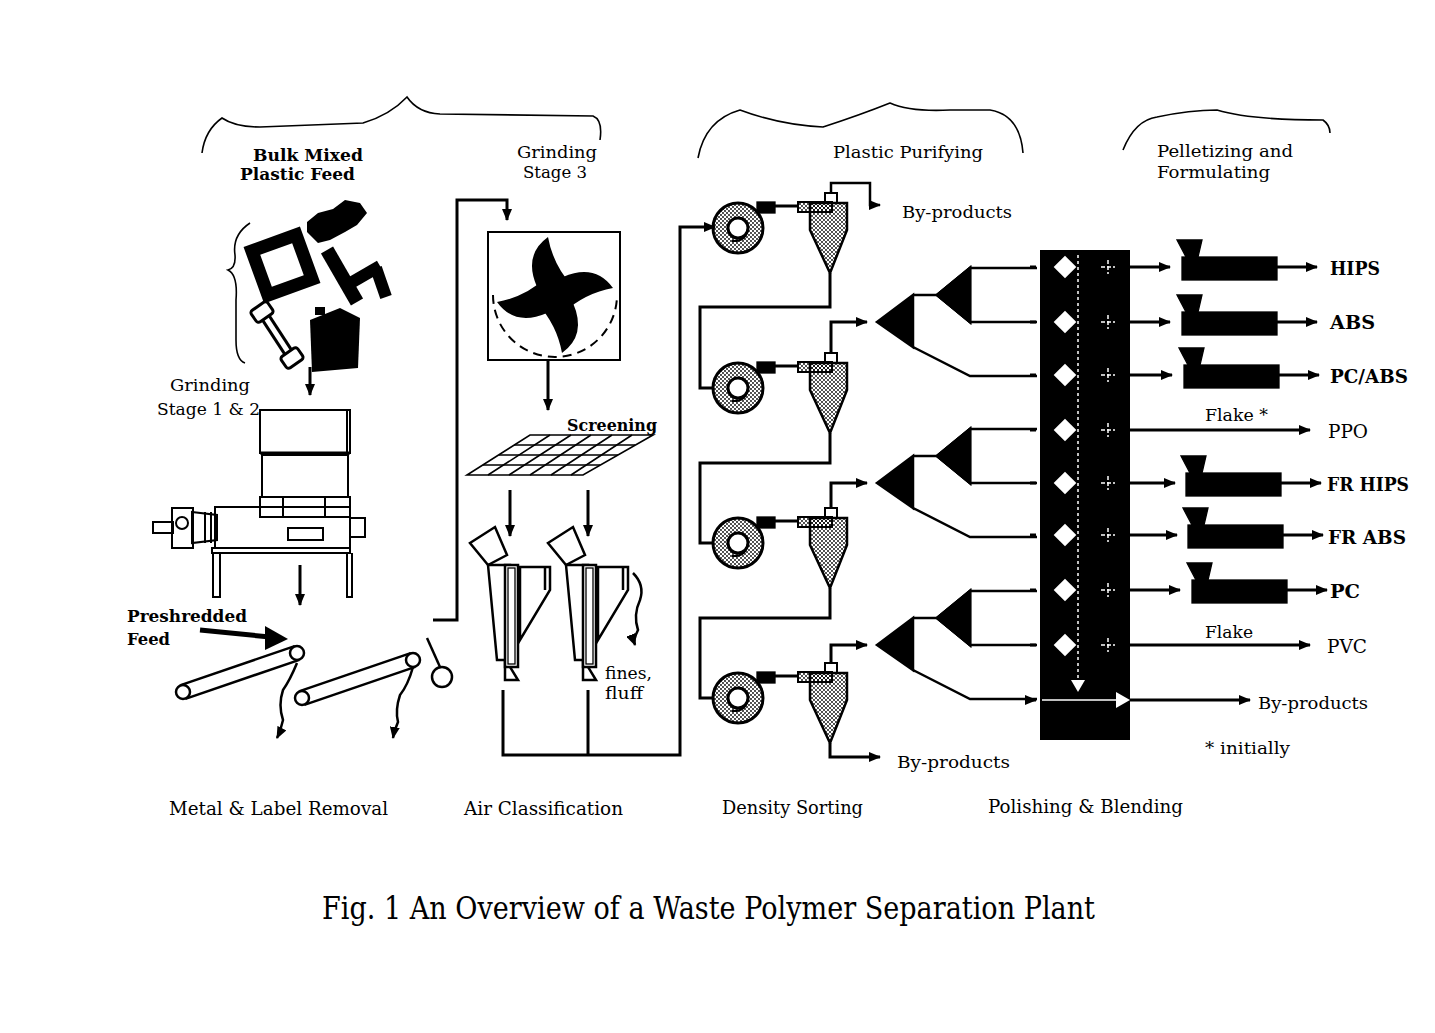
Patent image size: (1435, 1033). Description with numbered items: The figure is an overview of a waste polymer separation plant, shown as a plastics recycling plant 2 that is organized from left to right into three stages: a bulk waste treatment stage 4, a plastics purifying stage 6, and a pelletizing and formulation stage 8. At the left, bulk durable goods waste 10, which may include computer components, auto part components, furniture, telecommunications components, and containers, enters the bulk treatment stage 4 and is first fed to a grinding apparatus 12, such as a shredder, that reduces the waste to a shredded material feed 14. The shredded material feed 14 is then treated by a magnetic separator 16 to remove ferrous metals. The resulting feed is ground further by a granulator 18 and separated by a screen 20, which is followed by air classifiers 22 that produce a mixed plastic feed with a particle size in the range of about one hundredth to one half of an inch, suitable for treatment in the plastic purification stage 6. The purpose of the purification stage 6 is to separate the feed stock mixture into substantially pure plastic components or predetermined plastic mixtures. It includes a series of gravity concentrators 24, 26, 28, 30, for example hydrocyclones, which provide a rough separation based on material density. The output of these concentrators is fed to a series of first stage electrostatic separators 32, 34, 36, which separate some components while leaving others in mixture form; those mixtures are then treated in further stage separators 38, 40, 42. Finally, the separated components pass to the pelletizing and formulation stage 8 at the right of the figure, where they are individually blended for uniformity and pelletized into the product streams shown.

The plastics recycling plant 2 is at (310, 20).
The bulk waste treatment stage 4 is at (218, 118).
The plastics purifying stage 6 is at (912, 90).
The pelletizing and formulation stage 8 is at (1232, 100).
The bulk durable goods waste 10 is at (228, 270).
The grinding apparatus 12 is at (235, 500).
The shredded material feed 14 is at (217, 633).
The magnetic separator 16 is at (223, 688).
The granulator 18 is at (577, 230).
The screen 20 is at (612, 457).
The air classifiers 22 is at (603, 565).
The gravity concentrator 24 is at (847, 247).
The gravity concentrator 26 is at (853, 407).
The gravity concentrator 28 is at (850, 560).
The gravity concentrator 30 is at (850, 715).
The first stage electrostatic separator 32 is at (897, 300).
The first stage electrostatic separator 34 is at (898, 460).
The first stage electrostatic separator 36 is at (897, 620).
The further stage separator 38 is at (953, 317).
The further stage separator 40 is at (953, 483).
The further stage separator 42 is at (953, 640).